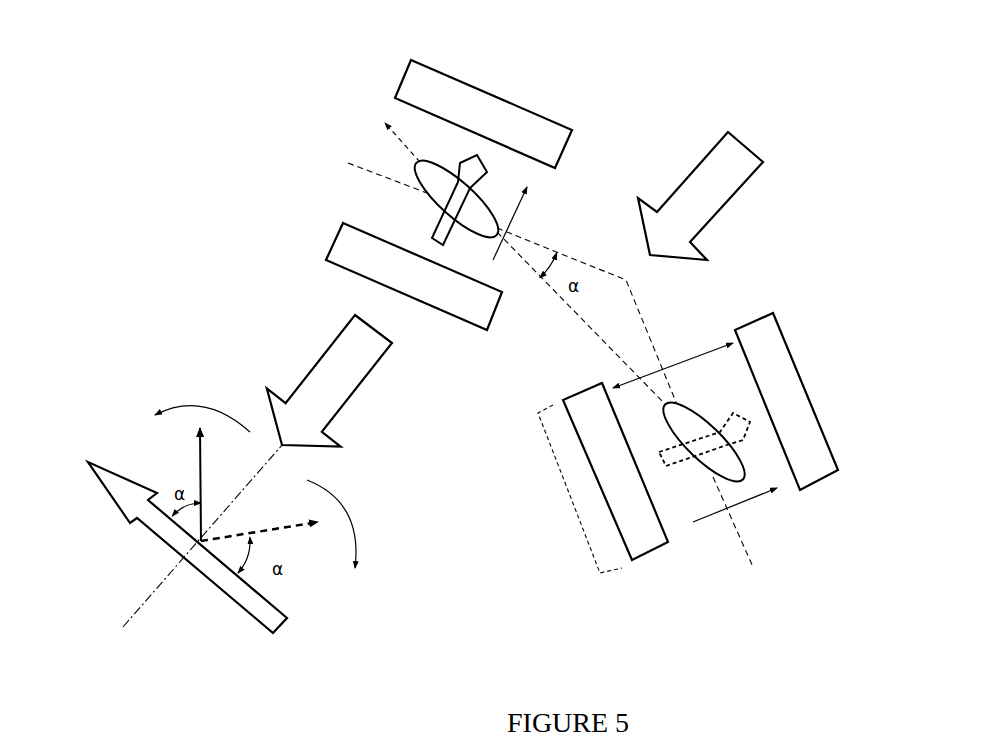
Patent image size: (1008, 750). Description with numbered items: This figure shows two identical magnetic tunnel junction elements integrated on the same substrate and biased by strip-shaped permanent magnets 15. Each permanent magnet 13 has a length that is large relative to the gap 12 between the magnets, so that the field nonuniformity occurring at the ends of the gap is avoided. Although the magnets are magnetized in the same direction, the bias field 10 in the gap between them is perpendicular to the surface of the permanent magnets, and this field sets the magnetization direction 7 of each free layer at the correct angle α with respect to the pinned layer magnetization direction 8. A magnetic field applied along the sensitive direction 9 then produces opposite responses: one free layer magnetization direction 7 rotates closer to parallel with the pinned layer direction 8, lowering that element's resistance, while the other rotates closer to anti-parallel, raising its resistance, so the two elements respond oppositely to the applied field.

The free layer magnetization direction 7 is at (190, 467).
The pinned layer magnetization direction 8 is at (218, 573).
The sensitive direction 9 is at (515, 289).
The bias field in the gap 10 is at (522, 222).
The gap between the magnets 12 is at (565, 495).
The permanent magnet 13 is at (698, 348).
The permanent magnets 15 is at (541, 137).